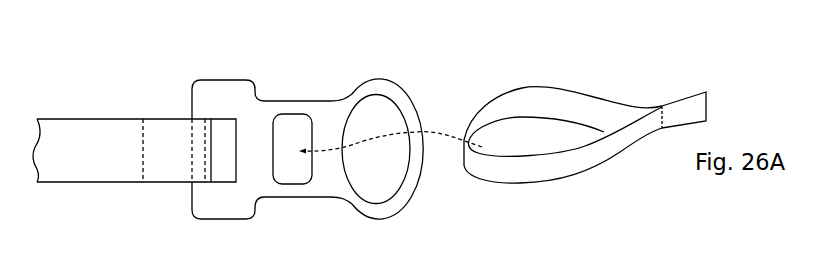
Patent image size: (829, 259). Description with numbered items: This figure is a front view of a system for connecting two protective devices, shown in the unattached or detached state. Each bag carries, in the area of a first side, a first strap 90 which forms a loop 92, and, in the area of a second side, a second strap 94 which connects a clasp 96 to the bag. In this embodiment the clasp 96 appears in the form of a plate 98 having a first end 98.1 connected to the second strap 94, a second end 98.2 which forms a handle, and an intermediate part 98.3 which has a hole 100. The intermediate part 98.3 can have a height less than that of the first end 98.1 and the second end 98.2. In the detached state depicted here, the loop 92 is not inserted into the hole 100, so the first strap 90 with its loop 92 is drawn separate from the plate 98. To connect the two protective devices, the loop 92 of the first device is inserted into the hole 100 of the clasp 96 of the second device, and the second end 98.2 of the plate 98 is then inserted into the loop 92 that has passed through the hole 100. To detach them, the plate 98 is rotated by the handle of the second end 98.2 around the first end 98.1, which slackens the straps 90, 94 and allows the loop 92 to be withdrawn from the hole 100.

The first strap 90 is at (605, 97).
The loop 92 is at (523, 120).
The second strap 94 is at (98, 130).
The clasp 96 is at (288, 92).
The plate 98 is at (302, 188).
The first end 98.1 is at (204, 79).
The second end 98.2 is at (393, 81).
The intermediate part 98.3 is at (311, 100).
The hole 100 is at (293, 170).